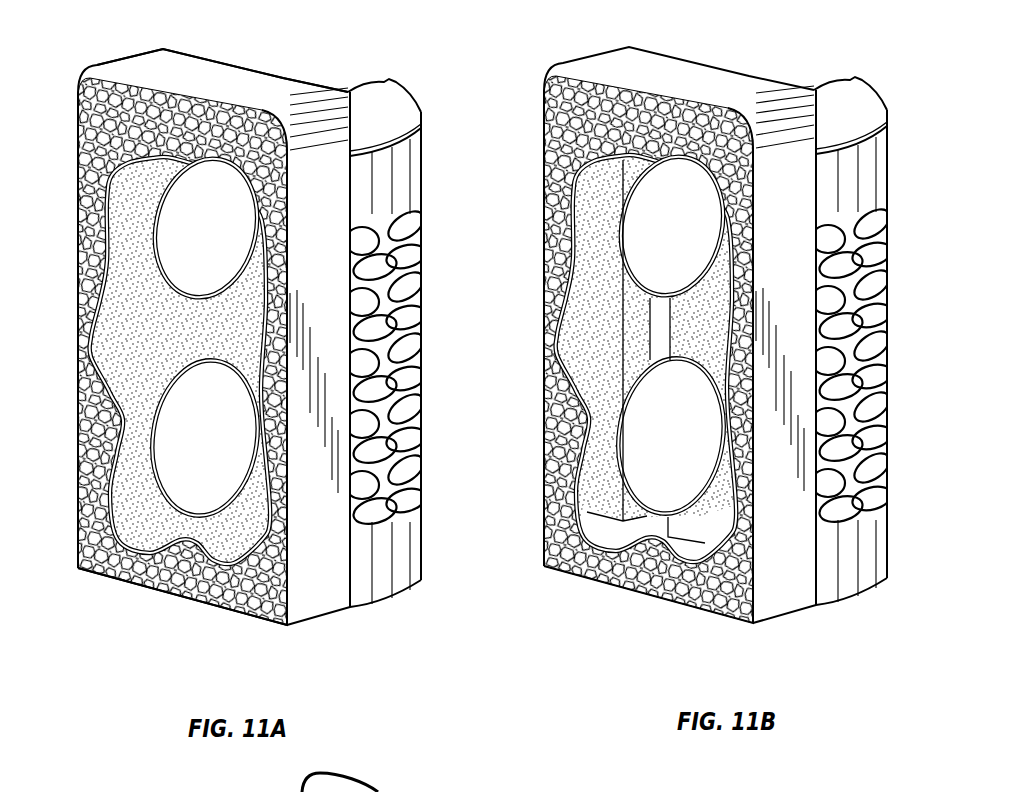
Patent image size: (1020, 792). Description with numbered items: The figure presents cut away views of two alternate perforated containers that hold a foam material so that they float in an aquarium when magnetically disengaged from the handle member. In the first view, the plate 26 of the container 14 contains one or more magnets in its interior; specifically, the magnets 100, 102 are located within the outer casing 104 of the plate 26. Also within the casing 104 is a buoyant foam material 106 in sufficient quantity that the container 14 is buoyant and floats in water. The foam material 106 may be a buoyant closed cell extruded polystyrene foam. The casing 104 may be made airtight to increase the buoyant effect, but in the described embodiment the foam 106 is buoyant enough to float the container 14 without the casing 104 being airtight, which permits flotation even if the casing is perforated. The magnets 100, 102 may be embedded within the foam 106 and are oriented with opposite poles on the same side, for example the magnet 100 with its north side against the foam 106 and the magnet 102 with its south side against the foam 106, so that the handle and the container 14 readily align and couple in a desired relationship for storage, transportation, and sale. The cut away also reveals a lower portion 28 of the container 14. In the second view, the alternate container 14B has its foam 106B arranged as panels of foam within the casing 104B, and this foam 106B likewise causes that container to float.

In FIG. 11A, the container 14 is at (260, 344).
In FIG. 11A, the plate 26 is at (173, 68).
In FIG. 11A, the bottom surface 28 is at (245, 587).
In FIG. 11A, the magnet 100 is at (173, 422).
In FIG. 11A, the magnet 102 is at (167, 232).
In FIG. 11A, the outer casing 104 is at (118, 540).
In FIG. 11A, the buoyant foam material 106 is at (132, 505).
In FIG. 11B, the implant device (alternate) 14B is at (674, 332).
In FIG. 11B, the casing 104B is at (648, 368).
In FIG. 11B, the foam 106B is at (594, 360).